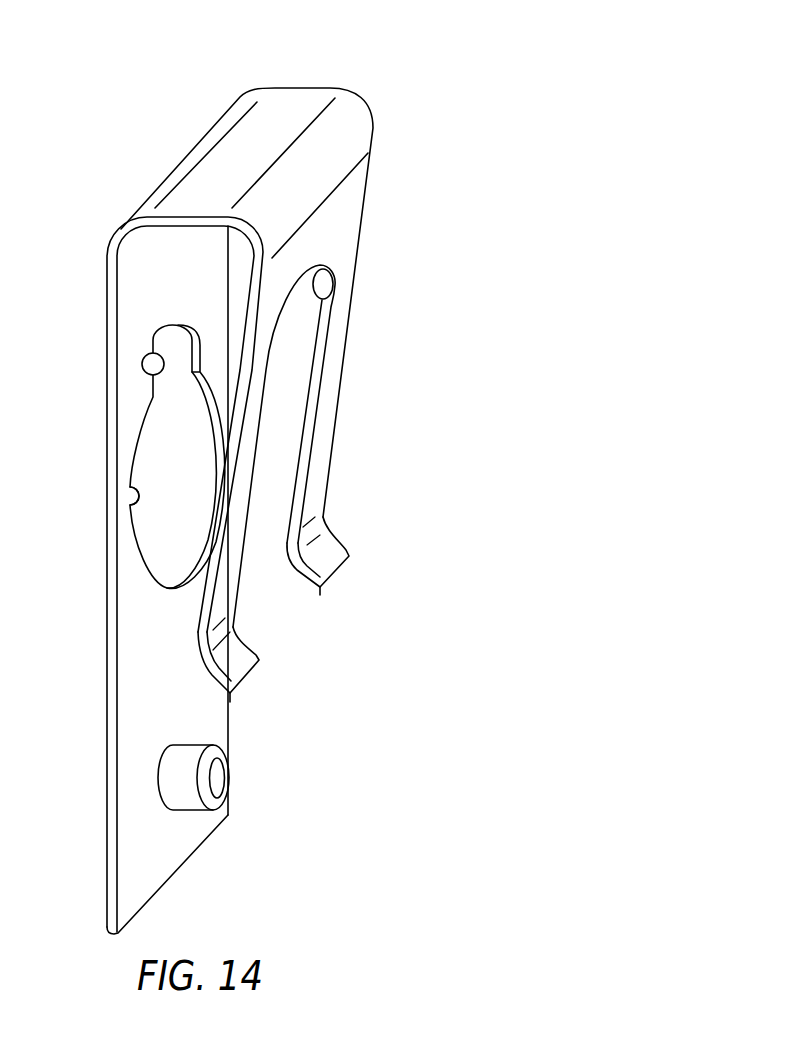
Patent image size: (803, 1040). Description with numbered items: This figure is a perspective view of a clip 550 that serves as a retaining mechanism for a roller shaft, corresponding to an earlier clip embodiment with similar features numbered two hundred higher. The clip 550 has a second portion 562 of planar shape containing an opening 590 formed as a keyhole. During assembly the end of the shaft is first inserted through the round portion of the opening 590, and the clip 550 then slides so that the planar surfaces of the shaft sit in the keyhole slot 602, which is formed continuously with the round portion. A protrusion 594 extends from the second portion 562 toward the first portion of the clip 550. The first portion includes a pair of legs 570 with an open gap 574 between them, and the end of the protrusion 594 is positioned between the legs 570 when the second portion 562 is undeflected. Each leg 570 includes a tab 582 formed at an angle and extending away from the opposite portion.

The clip 550 is at (374, 78).
The second portion 562 is at (108, 803).
The leg 570 is at (225, 583).
The open gap 574 is at (320, 290).
The tab 582 is at (242, 660).
The opening 590 is at (145, 588).
The protrusion 594 is at (140, 505).
The keyhole slot 602 is at (150, 377).